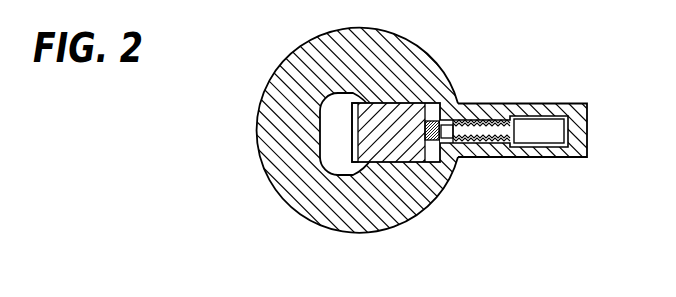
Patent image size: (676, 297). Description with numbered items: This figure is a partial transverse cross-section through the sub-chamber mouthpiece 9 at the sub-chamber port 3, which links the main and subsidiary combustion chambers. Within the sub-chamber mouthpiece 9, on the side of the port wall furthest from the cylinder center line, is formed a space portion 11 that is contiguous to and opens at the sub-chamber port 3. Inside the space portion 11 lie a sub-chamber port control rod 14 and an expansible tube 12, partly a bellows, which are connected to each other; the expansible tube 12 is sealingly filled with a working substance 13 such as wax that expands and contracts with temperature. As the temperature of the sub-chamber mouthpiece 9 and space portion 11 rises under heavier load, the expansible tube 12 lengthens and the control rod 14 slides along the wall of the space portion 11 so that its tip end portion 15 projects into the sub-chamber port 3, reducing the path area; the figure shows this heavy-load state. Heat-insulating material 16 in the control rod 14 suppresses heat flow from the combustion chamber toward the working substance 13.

The sub-chamber port 3 is at (332, 151).
The sub-chamber mouthpiece 9 is at (430, 185).
The space portion 11 is at (502, 147).
The expansible tube 12 is at (491, 141).
The working substance 13 is at (553, 133).
The sub-chamber port control rod 14 is at (390, 151).
The tip end portion 15 is at (357, 152).
The heat-insulating material 16 is at (441, 159).